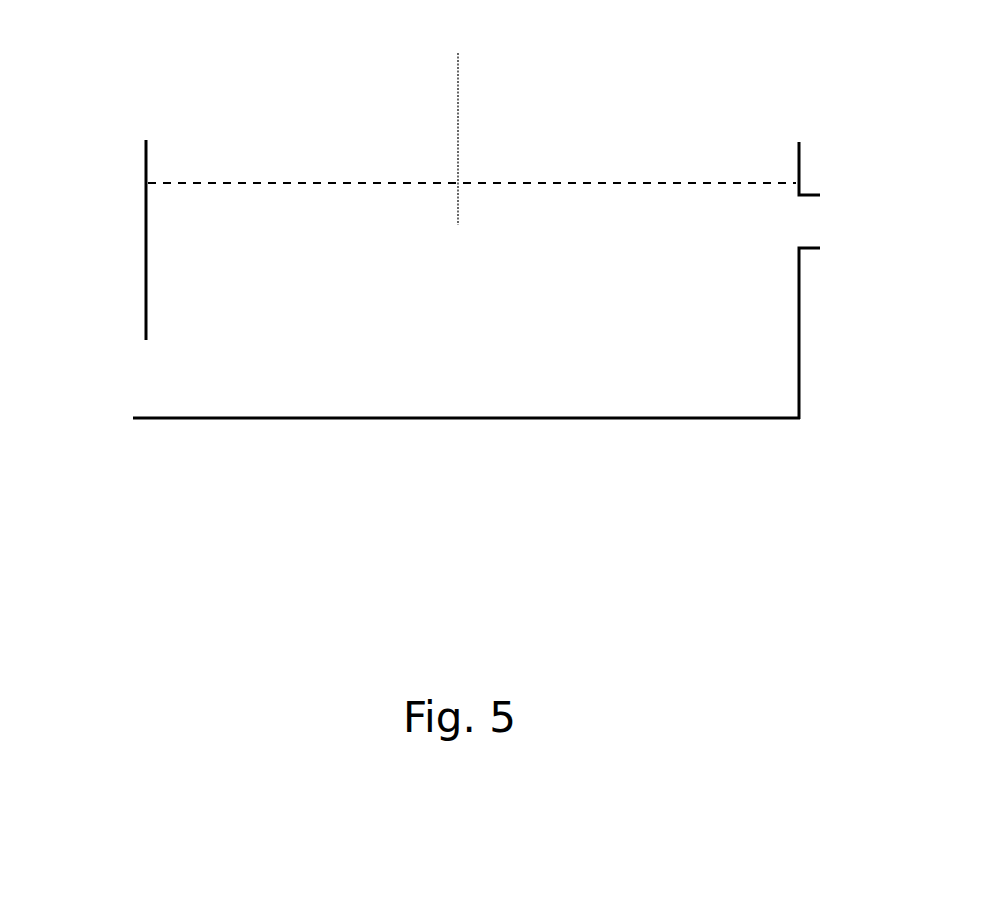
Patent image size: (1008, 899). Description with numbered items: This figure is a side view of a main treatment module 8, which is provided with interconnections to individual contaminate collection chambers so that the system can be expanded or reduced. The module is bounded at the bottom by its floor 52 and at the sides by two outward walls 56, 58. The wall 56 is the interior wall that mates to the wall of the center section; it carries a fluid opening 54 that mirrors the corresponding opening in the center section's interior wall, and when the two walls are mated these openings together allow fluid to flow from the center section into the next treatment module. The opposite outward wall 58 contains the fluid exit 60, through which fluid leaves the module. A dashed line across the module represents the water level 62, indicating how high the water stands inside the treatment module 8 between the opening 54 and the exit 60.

The treatment module 8 is at (457, 120).
The floor 52 is at (455, 418).
The fluid opening 54 is at (167, 365).
The interior wall 56 is at (146, 193).
The outward wall 58 is at (799, 346).
The fluid exit 60 is at (788, 227).
The water level 62 is at (650, 183).